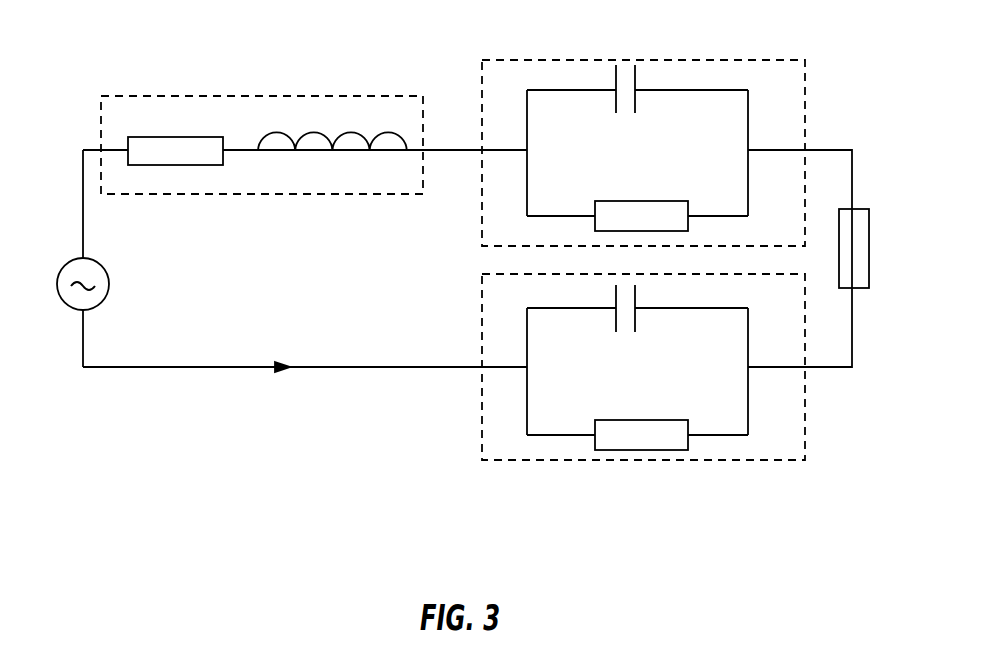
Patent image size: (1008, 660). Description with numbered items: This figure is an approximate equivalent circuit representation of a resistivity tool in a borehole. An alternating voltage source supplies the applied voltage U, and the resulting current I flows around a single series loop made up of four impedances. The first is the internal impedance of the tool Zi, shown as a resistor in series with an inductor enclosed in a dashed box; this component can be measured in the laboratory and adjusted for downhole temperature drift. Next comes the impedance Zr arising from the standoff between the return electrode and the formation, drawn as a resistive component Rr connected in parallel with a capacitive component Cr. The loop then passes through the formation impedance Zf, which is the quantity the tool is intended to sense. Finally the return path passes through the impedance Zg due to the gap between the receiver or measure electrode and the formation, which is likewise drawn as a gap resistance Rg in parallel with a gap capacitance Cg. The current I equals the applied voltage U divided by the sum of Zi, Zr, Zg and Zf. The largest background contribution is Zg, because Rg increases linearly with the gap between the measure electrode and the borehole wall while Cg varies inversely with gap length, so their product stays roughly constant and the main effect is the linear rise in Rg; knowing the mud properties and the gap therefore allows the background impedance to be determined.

The applied voltage U is at (66, 284).
The current I is at (285, 350).
The internal impedance of the tool Zi is at (262, 147).
The impedance due to the standoff between return electrode and formation Zr is at (643, 153).
The capacitive component Cr is at (622, 63).
The resistive component Rr is at (641, 192).
The impedance due to the gap between receiver and formation Zg is at (643, 367).
The gap capacitance Cg is at (613, 335).
The gap resistance Rg is at (641, 470).
The formation impedance Zf is at (872, 248).